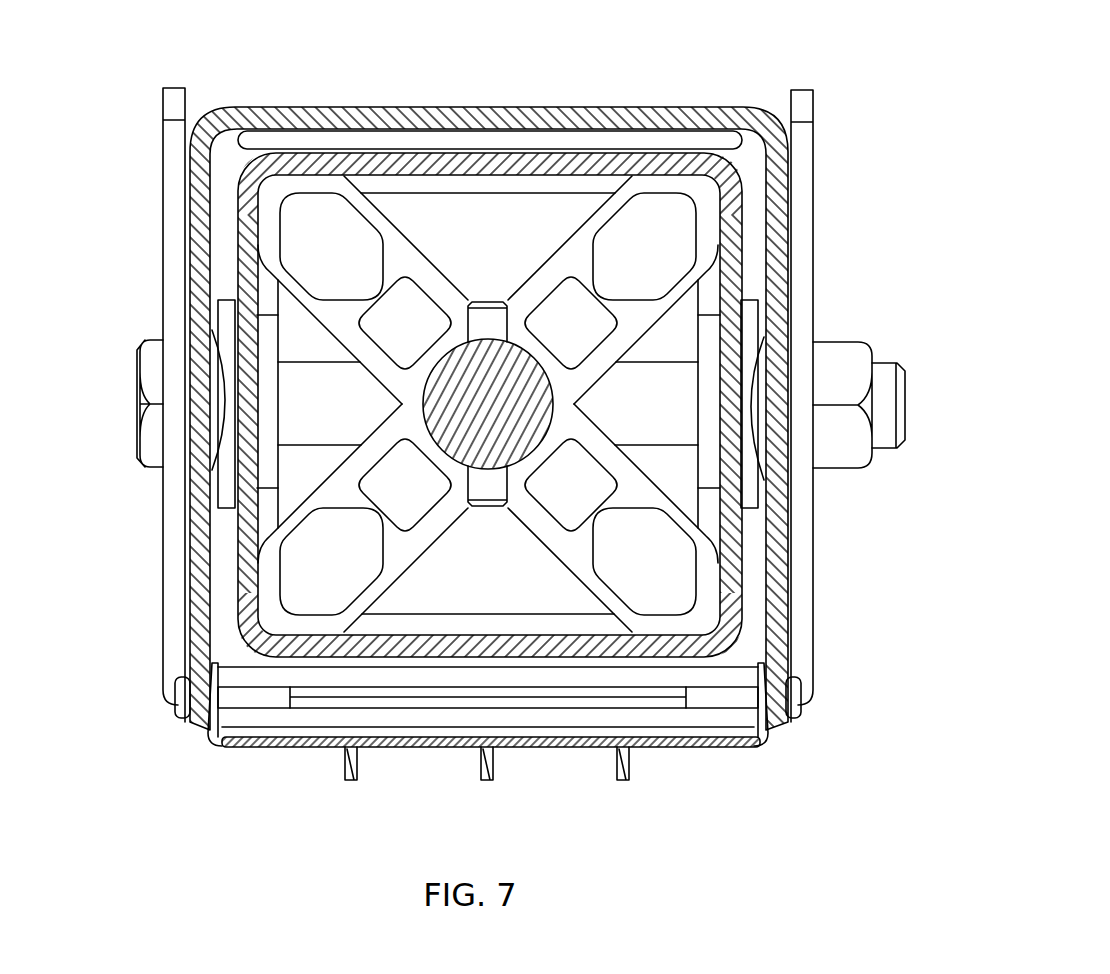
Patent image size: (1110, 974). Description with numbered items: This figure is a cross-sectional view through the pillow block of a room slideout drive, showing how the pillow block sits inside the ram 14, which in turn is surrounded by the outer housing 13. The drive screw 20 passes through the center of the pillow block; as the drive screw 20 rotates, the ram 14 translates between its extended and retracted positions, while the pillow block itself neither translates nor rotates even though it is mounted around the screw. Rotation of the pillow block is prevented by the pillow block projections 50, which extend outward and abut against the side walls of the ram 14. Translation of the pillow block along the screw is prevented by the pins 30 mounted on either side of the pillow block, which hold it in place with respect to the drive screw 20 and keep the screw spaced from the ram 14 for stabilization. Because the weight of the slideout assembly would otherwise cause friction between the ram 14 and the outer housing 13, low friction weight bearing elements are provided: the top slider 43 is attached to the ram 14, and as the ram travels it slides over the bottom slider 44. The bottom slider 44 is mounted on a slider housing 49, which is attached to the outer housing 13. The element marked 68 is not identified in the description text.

The outer housing 13 is at (601, 108).
The ram 14 is at (733, 284).
The drive screw 20 is at (452, 410).
The pins 30 is at (503, 300).
The top slider 43 is at (248, 147).
The bottom slider 44 is at (733, 671).
The slider housing 49 is at (810, 176).
The pillow block projections 50 is at (580, 229).
The leaf spring 68 is at (222, 418).